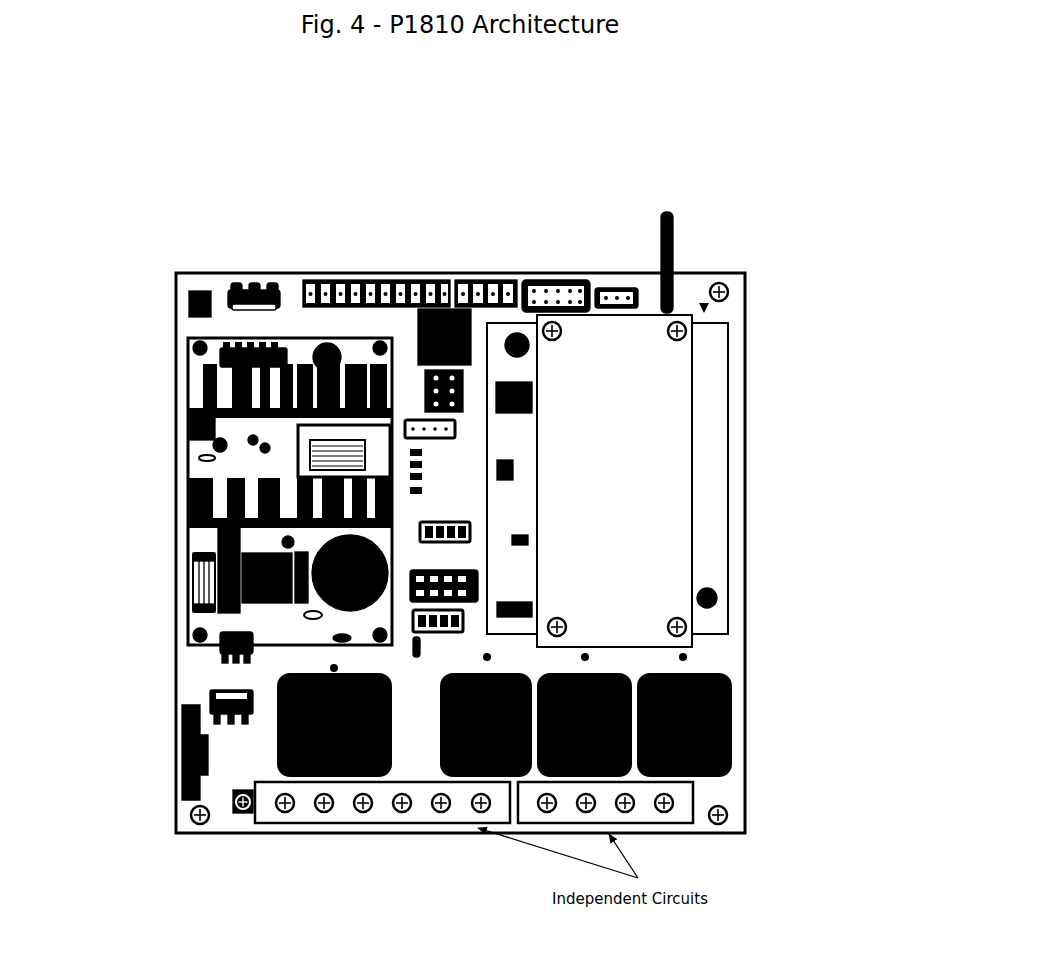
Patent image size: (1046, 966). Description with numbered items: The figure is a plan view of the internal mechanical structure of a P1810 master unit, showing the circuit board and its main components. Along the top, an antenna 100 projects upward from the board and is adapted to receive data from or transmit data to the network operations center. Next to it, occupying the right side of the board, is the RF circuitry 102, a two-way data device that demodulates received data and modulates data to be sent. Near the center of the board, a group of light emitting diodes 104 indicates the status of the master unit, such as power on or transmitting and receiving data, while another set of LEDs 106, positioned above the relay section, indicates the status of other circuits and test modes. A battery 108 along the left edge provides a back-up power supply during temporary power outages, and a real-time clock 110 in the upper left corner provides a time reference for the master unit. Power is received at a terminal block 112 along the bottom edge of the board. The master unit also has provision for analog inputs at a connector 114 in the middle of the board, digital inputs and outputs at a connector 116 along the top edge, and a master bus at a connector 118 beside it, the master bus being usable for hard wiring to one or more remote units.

The antenna 100 is at (690, 244).
The RF circuitry 102 is at (615, 428).
The light emitting diodes 104 is at (410, 463).
The LEDs 106 is at (694, 656).
The battery 108 is at (178, 755).
The real-time clock 110 is at (188, 303).
The terminal block 112 is at (298, 827).
The connector 114 is at (483, 585).
The connector 116 is at (387, 280).
The connector 118 is at (486, 278).